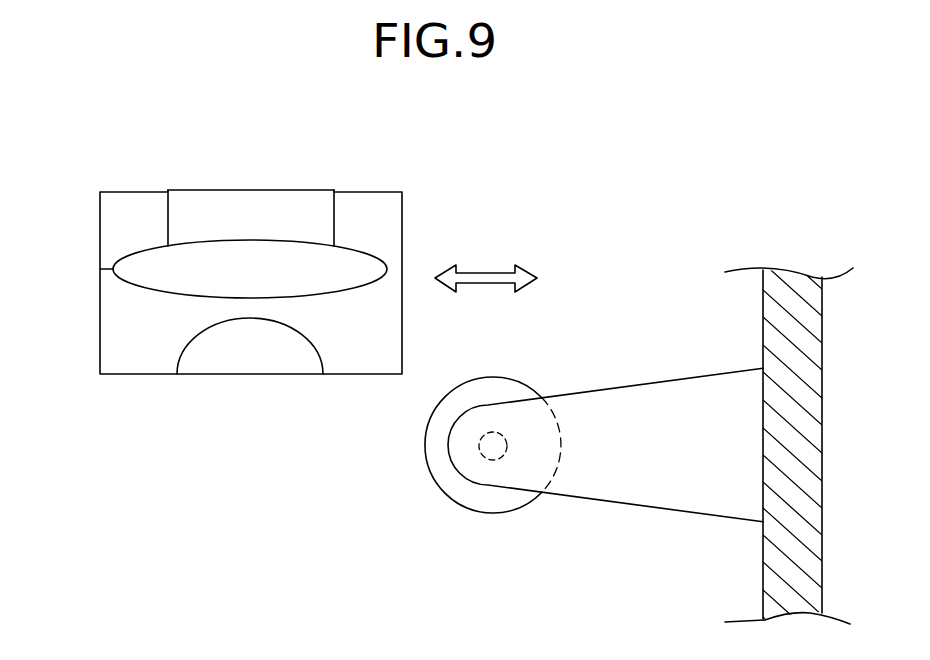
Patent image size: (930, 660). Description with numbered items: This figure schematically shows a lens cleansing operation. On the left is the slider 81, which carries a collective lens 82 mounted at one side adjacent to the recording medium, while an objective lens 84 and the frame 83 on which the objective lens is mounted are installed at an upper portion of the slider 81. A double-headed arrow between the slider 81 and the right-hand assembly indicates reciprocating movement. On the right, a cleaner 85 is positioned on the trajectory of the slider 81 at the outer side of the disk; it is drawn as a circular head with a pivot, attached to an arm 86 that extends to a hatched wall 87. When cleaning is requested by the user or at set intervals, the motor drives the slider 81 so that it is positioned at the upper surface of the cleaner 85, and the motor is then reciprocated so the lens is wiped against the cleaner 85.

The slider 81 is at (117, 333).
The collective lens 82 is at (232, 366).
The frame 83 is at (117, 218).
The objective lens 84 is at (275, 250).
The cleaner 85 is at (456, 490).
The arm 86 is at (654, 495).
The wall 87 is at (787, 316).